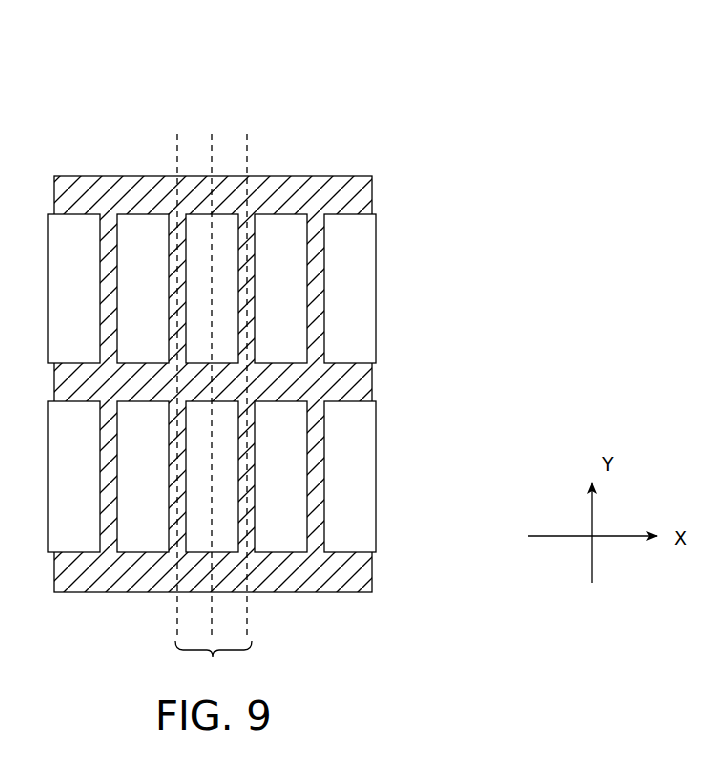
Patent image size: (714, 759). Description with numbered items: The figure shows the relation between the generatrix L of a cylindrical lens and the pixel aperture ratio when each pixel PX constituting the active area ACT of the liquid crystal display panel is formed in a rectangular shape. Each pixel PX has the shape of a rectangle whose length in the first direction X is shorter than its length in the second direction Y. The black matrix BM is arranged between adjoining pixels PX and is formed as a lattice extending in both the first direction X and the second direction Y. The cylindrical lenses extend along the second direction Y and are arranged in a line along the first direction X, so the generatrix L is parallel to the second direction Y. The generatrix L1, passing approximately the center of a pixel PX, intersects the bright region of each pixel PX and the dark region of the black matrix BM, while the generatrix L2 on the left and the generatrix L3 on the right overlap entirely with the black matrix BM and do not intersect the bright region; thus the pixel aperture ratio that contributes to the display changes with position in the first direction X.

The active area ACT is at (275, 378).
The black matrix BM is at (373, 189).
The pixel PX is at (222, 312).
The generatrix L1 is at (213, 134).
The generatrix L2 is at (178, 134).
The generatrix L3 is at (248, 134).
The generatrix L is at (213, 662).